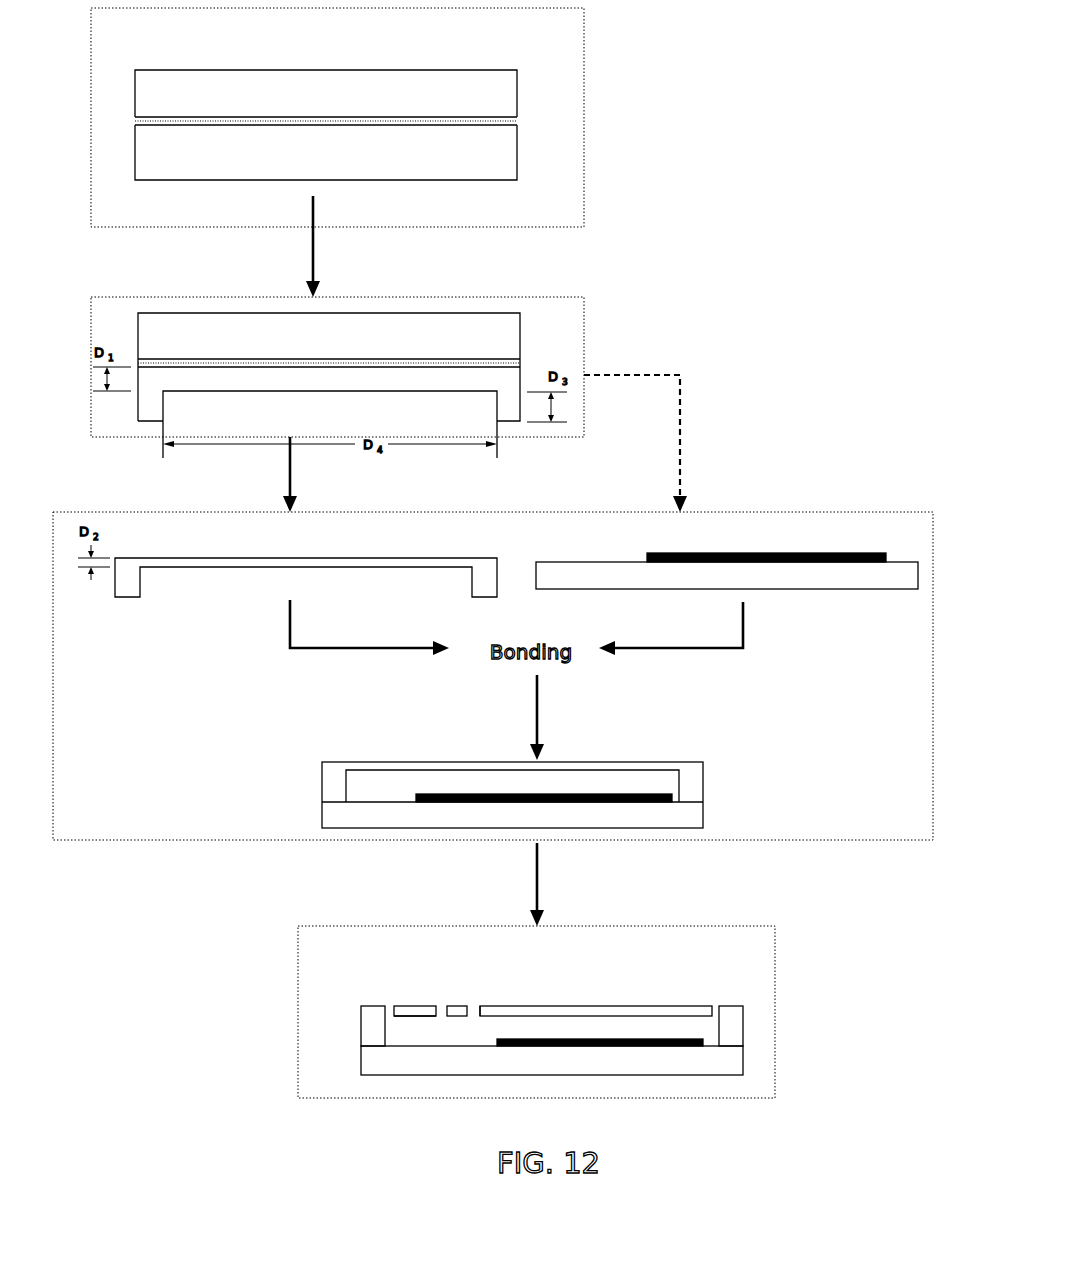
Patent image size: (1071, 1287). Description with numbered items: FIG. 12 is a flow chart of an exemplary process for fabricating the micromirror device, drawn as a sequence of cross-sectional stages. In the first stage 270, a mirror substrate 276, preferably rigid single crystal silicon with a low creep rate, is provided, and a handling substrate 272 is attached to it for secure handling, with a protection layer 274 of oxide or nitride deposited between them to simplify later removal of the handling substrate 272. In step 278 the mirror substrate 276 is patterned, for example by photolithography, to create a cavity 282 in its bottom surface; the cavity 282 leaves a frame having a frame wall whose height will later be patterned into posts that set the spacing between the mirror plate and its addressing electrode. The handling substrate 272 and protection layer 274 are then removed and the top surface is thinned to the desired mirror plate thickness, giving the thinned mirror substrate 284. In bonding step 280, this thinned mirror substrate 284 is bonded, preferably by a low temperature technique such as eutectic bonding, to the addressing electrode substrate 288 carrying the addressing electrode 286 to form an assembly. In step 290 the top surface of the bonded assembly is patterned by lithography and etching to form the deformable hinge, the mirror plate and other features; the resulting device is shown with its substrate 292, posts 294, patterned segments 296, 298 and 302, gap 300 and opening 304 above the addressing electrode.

The step of providing the mirror substrate with handling substrate and protection la 270 is at (583, 132).
The handling substrate 272 is at (368, 85).
The protection layer 274 is at (517, 123).
The mirror substrate 276 is at (368, 170).
The cavity patterning step 278 is at (583, 367).
The bonding step 280 is at (755, 510).
The cavity 282 is at (373, 377).
The thinned mirror substrate 284 is at (355, 562).
The addressing electrode 286 is at (725, 553).
The addressing electrode substrate 288 is at (780, 578).
The hinge and mirror plate patterning step 290 is at (775, 995).
The substrate 292 is at (370, 1026).
The support wall 294 is at (390, 1005).
The membrane segment 296 is at (440, 1003).
The membrane segment 298 is at (457, 1002).
The gap 300 is at (475, 1005).
The membrane plate 302 is at (595, 1012).
The slot 304 is at (405, 1010).